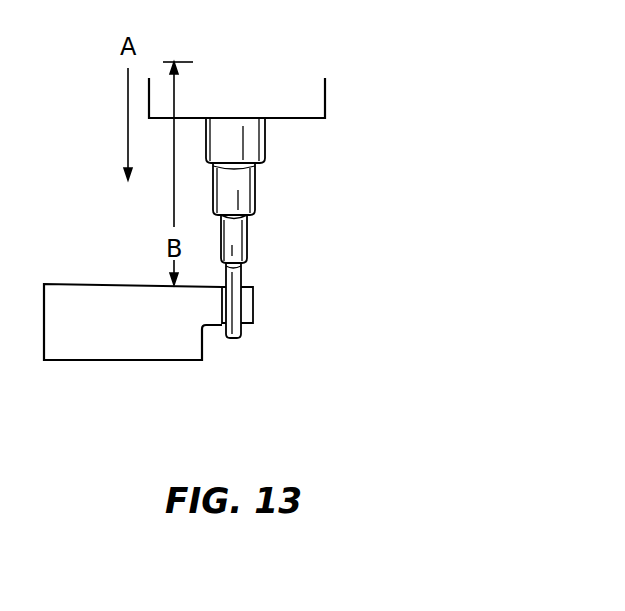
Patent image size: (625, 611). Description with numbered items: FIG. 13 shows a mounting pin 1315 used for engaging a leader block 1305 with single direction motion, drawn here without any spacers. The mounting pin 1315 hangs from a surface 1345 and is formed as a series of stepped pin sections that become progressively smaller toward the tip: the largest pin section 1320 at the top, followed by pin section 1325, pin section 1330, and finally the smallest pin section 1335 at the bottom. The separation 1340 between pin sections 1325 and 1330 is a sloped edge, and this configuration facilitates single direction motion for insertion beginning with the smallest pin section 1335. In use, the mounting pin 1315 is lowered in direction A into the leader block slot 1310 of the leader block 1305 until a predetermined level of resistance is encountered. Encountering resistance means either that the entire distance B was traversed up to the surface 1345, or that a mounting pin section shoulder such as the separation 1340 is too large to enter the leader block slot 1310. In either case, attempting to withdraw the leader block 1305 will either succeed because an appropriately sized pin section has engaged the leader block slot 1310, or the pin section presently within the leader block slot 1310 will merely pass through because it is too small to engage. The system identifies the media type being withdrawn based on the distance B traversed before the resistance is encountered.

The leader block 1305 is at (102, 340).
The leader block slot 1310 is at (243, 325).
The mounting pin 1315 is at (283, 92).
The pin section 1320 is at (265, 133).
The pin section 1325 is at (257, 190).
The pin section 1330 is at (247, 247).
The smallest pin section 1335 is at (232, 305).
The separation 1340 is at (252, 217).
The surface 1345 is at (312, 118).